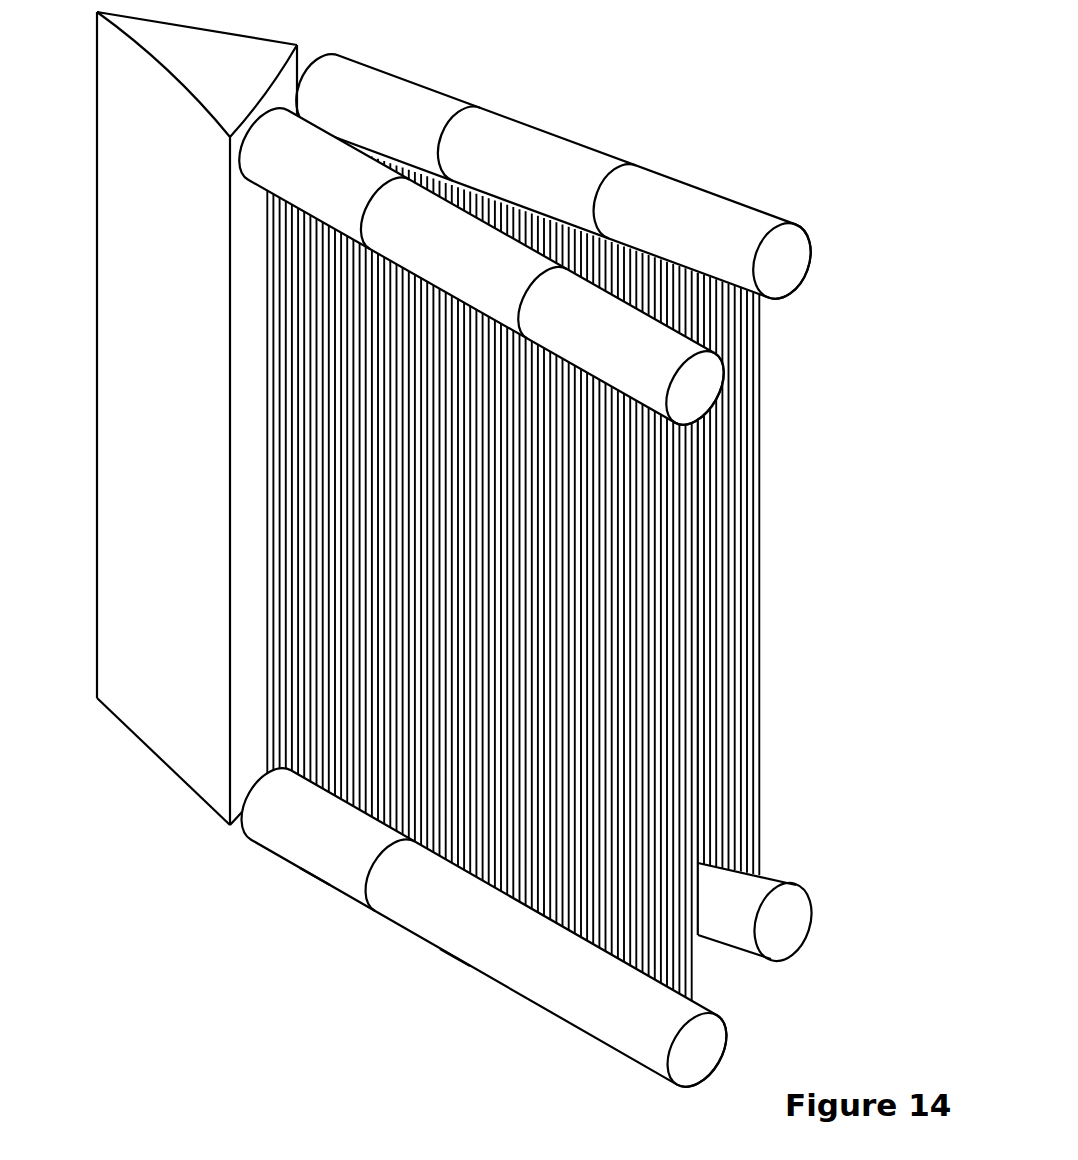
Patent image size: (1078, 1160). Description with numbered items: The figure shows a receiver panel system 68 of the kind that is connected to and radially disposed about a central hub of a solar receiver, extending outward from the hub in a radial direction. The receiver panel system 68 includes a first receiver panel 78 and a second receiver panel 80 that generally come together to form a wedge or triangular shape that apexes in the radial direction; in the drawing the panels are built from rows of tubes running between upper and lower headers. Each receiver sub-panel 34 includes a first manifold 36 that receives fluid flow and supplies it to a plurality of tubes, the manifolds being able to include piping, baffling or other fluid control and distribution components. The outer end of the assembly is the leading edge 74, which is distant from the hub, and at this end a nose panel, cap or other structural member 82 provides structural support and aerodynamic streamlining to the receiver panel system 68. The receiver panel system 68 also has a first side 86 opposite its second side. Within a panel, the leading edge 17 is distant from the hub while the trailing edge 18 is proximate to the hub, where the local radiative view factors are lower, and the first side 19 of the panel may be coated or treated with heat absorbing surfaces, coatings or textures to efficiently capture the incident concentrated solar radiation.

The receiver panel system 68 is at (764, 93).
The second receiver panel 80 is at (689, 184).
The receiver sub-panel 34 is at (763, 213).
The first manifold 36 is at (560, 1018).
The first side 19 is at (290, 530).
The leading edge 17 is at (262, 648).
The trailing edge 18 is at (705, 773).
The leading edge 74 is at (96, 626).
The nose panel 82 is at (168, 770).
The first side 86 is at (313, 877).
The first receiver panel 78 is at (453, 960).